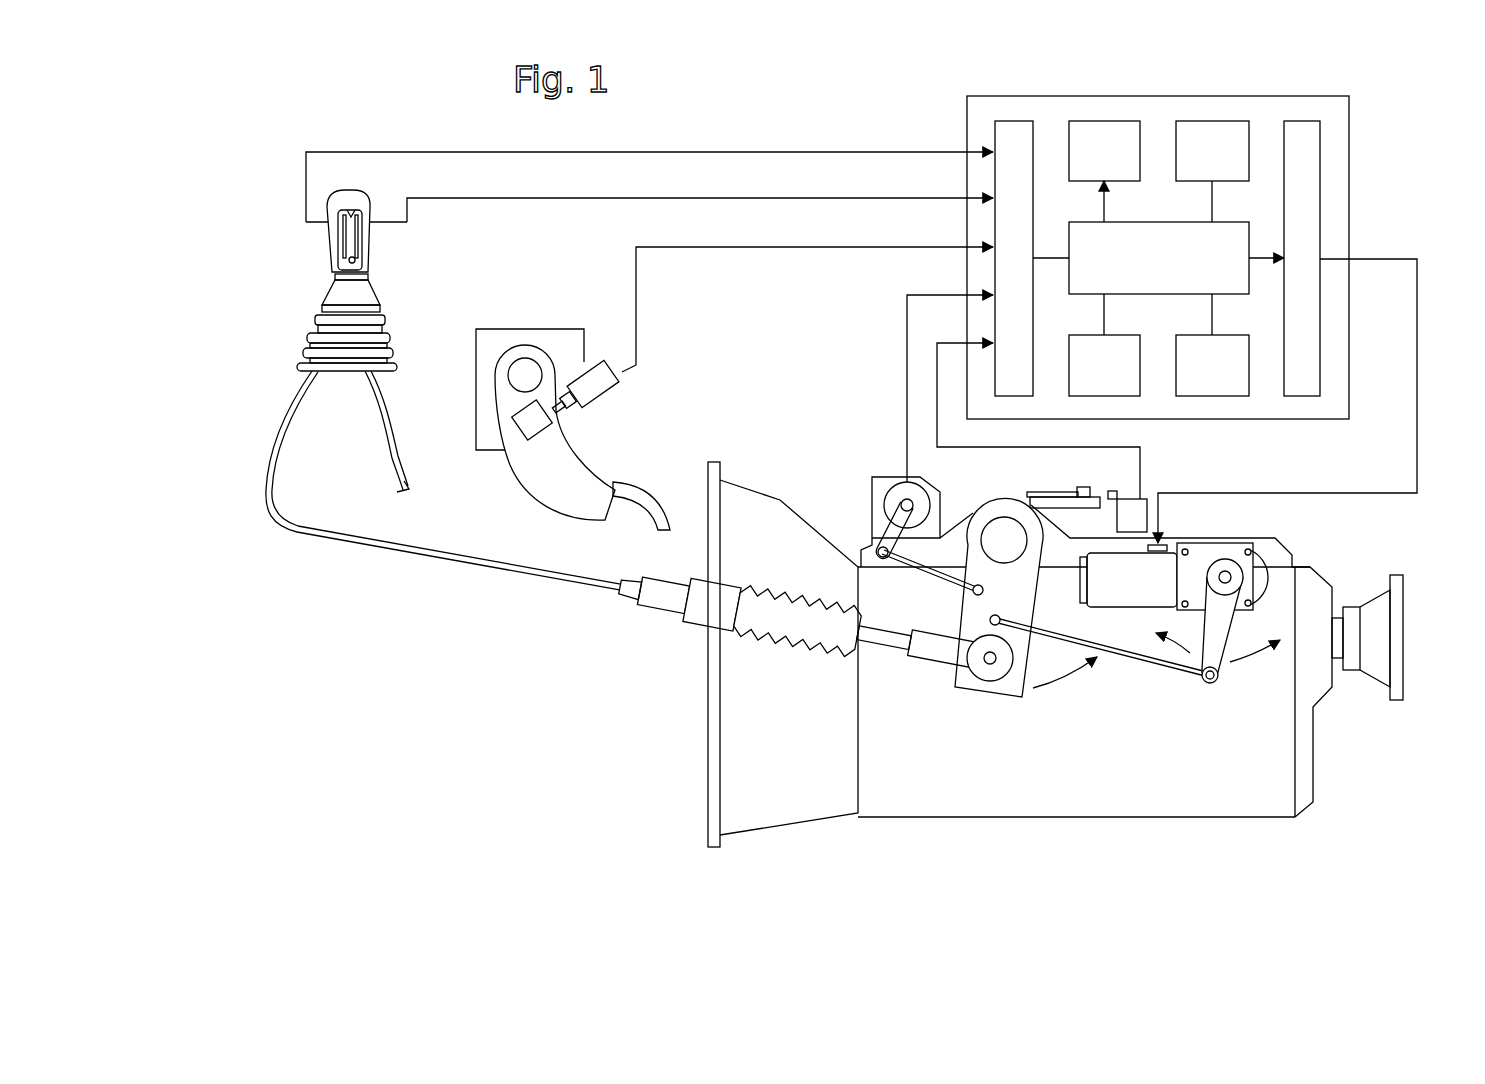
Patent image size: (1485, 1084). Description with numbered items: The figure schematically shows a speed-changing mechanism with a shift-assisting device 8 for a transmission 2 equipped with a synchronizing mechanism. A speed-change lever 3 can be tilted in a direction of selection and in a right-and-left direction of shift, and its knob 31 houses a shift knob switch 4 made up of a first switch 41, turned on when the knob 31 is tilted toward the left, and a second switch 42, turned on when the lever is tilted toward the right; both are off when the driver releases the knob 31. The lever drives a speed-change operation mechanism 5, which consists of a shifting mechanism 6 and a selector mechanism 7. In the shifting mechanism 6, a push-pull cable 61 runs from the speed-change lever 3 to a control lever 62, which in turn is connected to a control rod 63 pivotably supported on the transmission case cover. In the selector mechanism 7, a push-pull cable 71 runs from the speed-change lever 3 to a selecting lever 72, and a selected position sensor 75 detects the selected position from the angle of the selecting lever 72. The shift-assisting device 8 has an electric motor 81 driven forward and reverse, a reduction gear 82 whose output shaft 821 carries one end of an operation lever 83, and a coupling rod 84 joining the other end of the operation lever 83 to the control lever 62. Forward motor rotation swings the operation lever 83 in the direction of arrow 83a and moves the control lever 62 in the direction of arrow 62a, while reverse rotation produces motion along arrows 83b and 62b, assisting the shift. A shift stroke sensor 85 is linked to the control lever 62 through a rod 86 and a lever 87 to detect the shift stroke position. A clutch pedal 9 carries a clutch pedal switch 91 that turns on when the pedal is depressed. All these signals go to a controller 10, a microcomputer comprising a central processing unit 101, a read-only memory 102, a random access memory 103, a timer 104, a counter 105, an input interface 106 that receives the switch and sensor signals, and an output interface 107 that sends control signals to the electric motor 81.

The transmission 2 is at (1068, 672).
The speed-change lever 3 is at (339, 239).
The shift knob switch 4 is at (350, 197).
The speed-change operation mechanism 5 is at (975, 756).
The shifting mechanism 6 is at (936, 611).
The selector mechanism 7 is at (1152, 458).
The shift-assisting device 8 is at (1298, 543).
The clutch pedal 9 is at (557, 505).
The controller 10 is at (976, 87).
The knob 31 is at (325, 201).
The first switch 41 is at (340, 232).
The second switch 42 is at (362, 235).
The push-pull cable 61 is at (557, 586).
The control lever 62 is at (999, 606).
The arrow 62a is at (876, 612).
The arrow 62b is at (1073, 689).
The control rod 63 is at (1000, 530).
The push-pull cable 71 is at (392, 458).
The selecting lever 72 is at (1063, 510).
The selected position sensor 75 is at (1147, 499).
The electric motor 81 is at (1100, 594).
The reduction gear 82 is at (1203, 548).
The output shaft 821 is at (1225, 566).
The operation lever 83 is at (1255, 609).
The arrow 83a is at (1149, 631).
The arrow 83b is at (1264, 636).
The coupling rod 84 is at (1140, 668).
The shift stroke sensor 85 is at (897, 483).
The rod 86 is at (940, 578).
The lever 87 is at (887, 532).
The clutch pedal switch 91 is at (612, 392).
The central processing unit 101 is at (1249, 280).
The read-only memory 102 is at (1086, 121).
The random access memory 103 is at (1208, 121).
The timer 104 is at (1069, 352).
The counter 105 is at (1240, 396).
The input interface 106 is at (992, 190).
The output interface 107 is at (1321, 162).